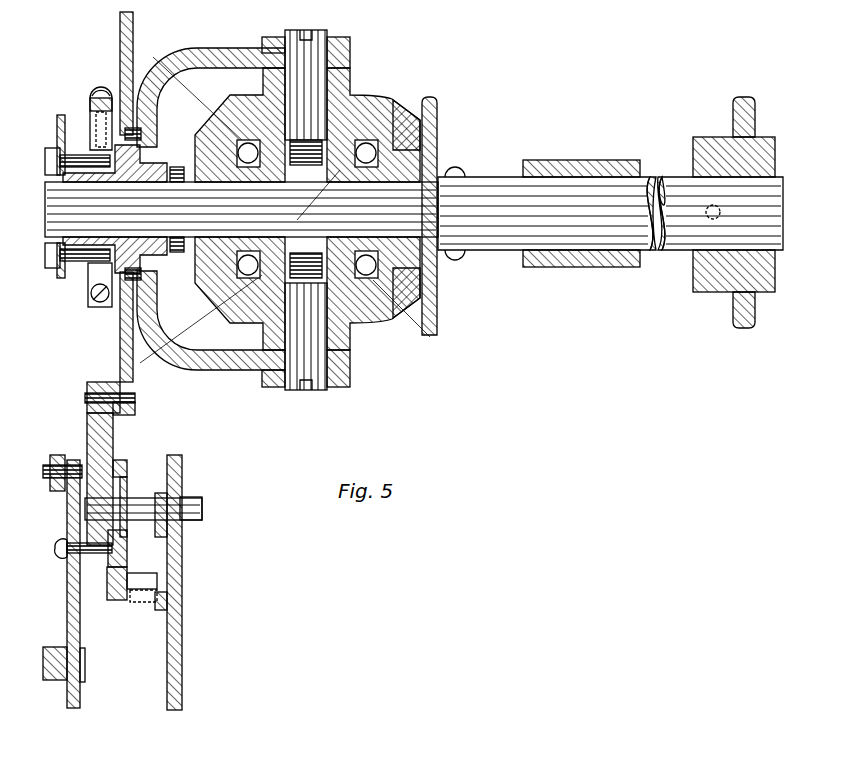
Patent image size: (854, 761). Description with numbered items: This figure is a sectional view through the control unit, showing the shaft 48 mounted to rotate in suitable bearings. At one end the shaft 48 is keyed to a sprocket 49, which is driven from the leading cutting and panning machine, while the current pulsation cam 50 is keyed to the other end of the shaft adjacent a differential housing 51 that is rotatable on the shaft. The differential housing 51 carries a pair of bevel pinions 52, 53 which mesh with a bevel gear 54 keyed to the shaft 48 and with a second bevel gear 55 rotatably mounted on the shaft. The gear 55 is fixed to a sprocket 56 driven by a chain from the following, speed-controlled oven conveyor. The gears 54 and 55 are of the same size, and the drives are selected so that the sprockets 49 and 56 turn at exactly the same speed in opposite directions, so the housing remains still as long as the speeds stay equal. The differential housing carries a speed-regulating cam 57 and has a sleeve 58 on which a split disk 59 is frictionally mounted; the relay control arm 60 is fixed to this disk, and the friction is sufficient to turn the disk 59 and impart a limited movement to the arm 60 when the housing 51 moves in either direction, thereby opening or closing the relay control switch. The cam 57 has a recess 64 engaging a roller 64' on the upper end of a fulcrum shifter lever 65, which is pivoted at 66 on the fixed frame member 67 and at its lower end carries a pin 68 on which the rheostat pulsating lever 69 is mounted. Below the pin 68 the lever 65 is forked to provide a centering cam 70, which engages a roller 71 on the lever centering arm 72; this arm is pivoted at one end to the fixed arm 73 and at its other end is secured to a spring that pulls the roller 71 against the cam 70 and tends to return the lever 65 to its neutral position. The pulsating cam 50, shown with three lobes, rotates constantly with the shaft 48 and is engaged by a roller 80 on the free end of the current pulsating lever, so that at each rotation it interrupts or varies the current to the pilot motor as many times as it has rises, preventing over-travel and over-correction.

The shaft 48 is at (644, 177).
The sprocket 49 is at (716, 137).
The current pulsation cam 50 is at (58, 118).
The differential housing 51 is at (215, 50).
The bevel pinion 52 is at (365, 97).
The bevel pinion 53 is at (368, 320).
The bevel gear 54 is at (195, 283).
The second bevel gear 55 is at (405, 112).
The sprocket 56 is at (437, 117).
The speed-regulating cam 57 is at (133, 17).
The sleeve 58 is at (178, 167).
The split disk 59 is at (88, 115).
The relay control arm 60 is at (92, 92).
The recess 64 is at (121, 392).
The roller 64' is at (140, 406).
The fulcrum shifter lever 65 is at (87, 420).
The pivot 66 is at (87, 515).
The fixed frame member 67 is at (182, 562).
The pin 68 is at (55, 548).
The rheostat pulsating lever 69 is at (67, 582).
The centering cam 70 is at (127, 553).
The roller 71 is at (110, 600).
The lever centering arm 72 is at (143, 602).
The fixed arm 73 is at (158, 610).
The roller 80 is at (60, 647).